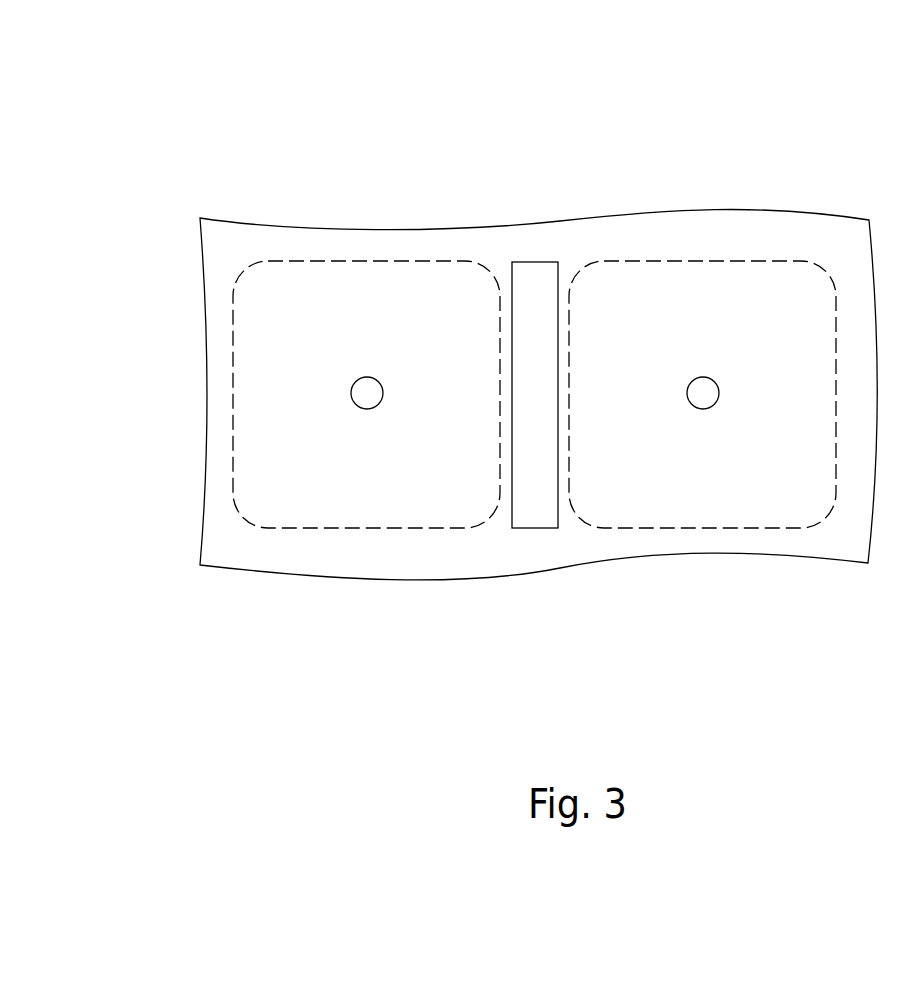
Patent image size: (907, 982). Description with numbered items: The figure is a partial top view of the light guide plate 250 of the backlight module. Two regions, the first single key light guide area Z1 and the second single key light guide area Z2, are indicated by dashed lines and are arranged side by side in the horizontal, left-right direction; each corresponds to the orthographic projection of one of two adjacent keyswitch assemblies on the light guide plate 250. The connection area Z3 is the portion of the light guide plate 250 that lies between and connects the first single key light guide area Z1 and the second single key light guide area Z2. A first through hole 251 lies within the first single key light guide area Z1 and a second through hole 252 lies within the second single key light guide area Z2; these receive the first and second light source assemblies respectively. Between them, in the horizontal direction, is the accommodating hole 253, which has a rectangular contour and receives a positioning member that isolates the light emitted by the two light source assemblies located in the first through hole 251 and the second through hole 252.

The light guide plate 250 is at (173, 70).
The first single key light guide area Z1 is at (288, 252).
The second single key light guide area Z2 is at (625, 252).
The connection area Z3 is at (396, 234).
The accommodating hole 253 is at (532, 252).
The first through hole 251 is at (361, 425).
The second through hole 252 is at (698, 425).